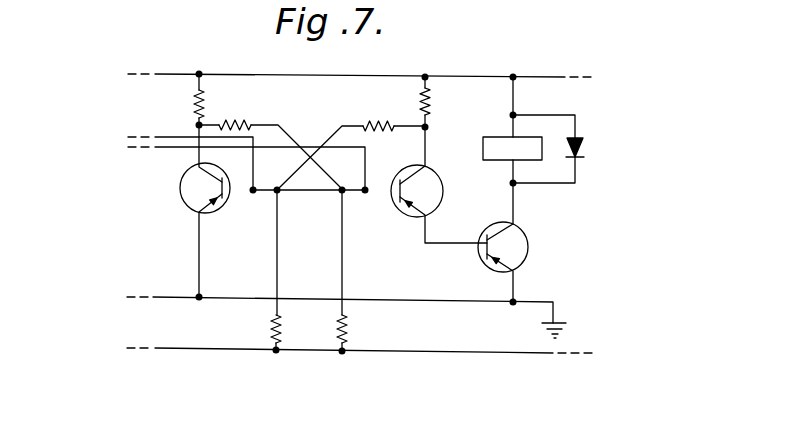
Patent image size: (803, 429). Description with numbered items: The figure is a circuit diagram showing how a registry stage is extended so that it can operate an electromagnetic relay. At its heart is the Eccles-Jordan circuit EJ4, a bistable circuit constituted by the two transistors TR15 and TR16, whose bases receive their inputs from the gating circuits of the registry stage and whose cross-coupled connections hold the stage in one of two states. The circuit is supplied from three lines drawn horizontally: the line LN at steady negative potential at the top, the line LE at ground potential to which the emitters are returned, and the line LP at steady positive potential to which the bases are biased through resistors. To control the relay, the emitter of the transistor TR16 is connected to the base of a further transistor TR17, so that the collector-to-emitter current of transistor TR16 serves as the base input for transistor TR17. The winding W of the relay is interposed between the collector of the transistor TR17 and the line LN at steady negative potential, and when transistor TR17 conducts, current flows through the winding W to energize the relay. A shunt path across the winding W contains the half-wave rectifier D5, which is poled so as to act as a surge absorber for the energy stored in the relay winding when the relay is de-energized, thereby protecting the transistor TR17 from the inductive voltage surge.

The transistor TR15 is at (191, 212).
The transistor TR16 is at (434, 178).
The further transistor TR17 is at (528, 236).
The winding of the relay W is at (483, 148).
The half-wave rectifier D5 is at (568, 149).
The line at steady negative potential LN is at (387, 73).
The line at ground potential LE is at (423, 298).
The line at steady positive potential LP is at (451, 350).
The Eccles-Jordan circuit EJ4 is at (447, 360).